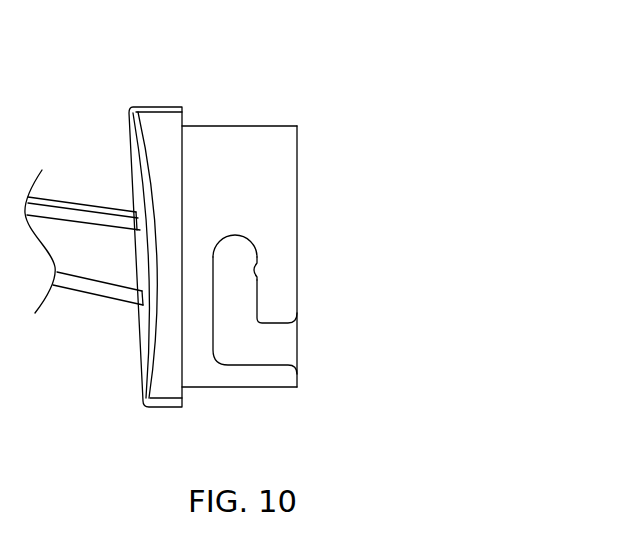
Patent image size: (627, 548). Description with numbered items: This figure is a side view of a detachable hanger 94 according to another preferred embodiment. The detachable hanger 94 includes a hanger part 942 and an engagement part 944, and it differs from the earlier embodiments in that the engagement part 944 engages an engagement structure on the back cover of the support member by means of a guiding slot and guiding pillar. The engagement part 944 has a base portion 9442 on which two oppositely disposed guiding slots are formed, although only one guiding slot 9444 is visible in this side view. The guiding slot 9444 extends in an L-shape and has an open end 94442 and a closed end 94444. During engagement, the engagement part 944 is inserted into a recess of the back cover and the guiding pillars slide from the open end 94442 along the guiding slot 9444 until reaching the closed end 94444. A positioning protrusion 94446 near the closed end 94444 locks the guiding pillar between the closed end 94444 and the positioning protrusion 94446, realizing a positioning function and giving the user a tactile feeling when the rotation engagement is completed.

The detachable hanger 94 is at (497, 65).
The hanger part 942 is at (98, 238).
The engagement part 944 is at (475, 132).
The base portion 9442 is at (277, 155).
The guiding slot 9444 is at (405, 210).
The open end 94442 is at (274, 344).
The closed end 94444 is at (232, 256).
The positioning protrusion 94446 is at (258, 270).